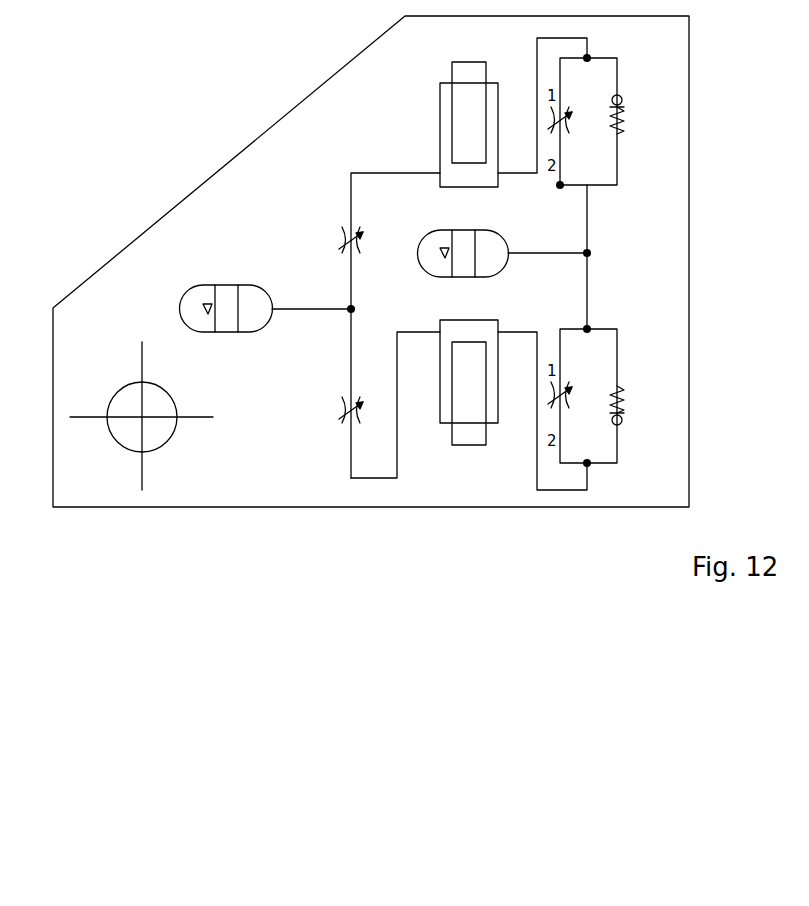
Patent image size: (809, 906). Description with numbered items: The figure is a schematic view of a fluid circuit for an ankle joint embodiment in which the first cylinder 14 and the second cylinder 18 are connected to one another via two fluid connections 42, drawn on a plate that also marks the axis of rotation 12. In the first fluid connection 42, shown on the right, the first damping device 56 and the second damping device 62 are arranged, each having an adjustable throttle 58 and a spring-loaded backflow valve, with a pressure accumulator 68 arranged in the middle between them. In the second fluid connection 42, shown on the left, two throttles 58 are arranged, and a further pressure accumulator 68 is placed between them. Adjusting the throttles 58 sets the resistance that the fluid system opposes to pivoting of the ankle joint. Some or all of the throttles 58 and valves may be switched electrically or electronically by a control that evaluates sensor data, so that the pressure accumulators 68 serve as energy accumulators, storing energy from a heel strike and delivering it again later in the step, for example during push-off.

The axis of rotation 12 is at (135, 420).
The first cylinder 14 is at (463, 332).
The second cylinder 18 is at (462, 178).
The fluid connection 42 is at (363, 173).
The first damping device 56 is at (640, 406).
The throttle 58 is at (335, 240).
The second damping device 62 is at (638, 101).
The pressure accumulator 68 is at (192, 287).